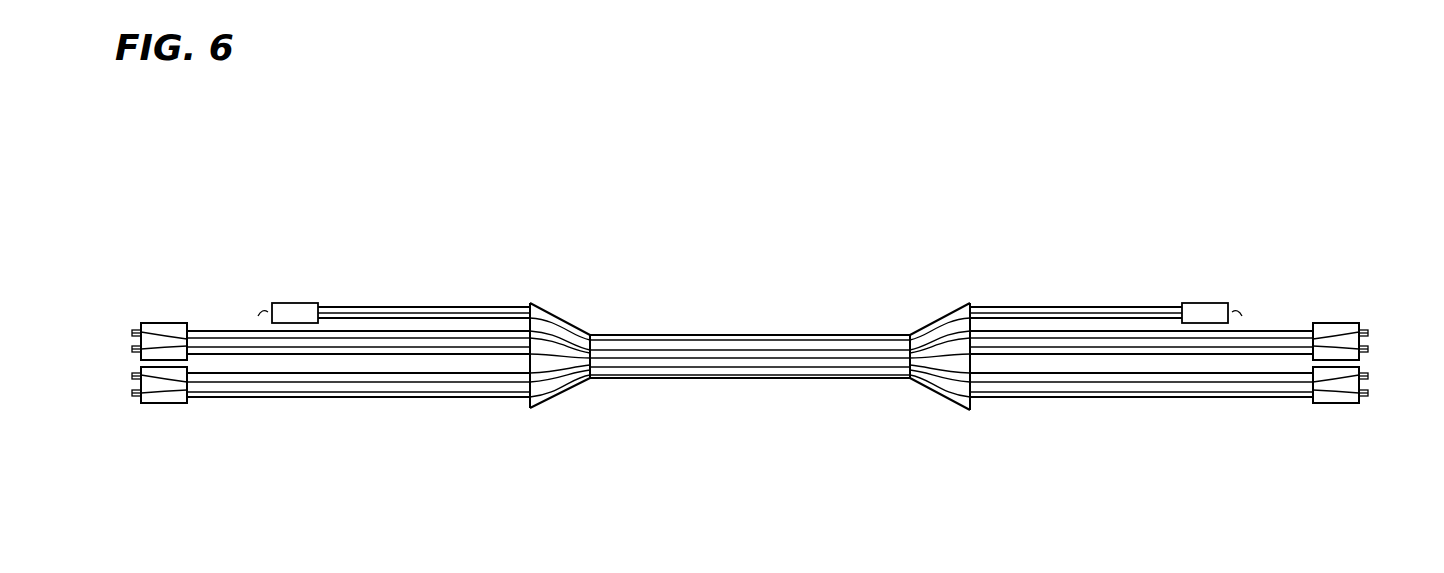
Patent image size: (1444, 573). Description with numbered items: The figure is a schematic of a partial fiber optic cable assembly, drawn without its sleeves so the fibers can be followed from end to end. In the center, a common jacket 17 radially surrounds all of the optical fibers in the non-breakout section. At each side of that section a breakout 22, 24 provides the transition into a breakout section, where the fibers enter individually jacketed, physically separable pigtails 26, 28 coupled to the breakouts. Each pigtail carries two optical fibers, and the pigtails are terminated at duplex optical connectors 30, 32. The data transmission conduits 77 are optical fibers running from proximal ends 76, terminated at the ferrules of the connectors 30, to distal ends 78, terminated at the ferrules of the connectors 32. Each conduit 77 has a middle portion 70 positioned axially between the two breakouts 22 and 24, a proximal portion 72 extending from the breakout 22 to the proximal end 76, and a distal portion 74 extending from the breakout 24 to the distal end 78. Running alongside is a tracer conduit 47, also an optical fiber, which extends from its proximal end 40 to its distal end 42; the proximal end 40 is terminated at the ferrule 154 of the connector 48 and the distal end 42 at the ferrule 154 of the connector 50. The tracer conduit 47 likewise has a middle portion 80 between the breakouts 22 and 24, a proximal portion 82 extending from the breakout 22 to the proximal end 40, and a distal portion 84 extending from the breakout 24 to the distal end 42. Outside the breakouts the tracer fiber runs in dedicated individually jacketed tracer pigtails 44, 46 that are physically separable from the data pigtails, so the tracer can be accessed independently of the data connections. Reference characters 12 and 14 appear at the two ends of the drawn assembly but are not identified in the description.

The second end of fiber optic cable assembly 12 is at (1388, 331).
The first end of fiber optic cable assembly 14 is at (112, 392).
The common jacket 17 is at (651, 335).
The breakout 22 is at (930, 322).
The breakout 24 is at (562, 393).
The pigtails 26 is at (1058, 355).
The pigtails 28 is at (443, 355).
The duplex optical connectors 30 is at (1336, 323).
The duplex optical connectors 32 is at (163, 323).
The proximal end 40 is at (1230, 311).
The distal end 42 is at (270, 311).
The tracer pigtail 44 is at (1057, 307).
The tracer pigtail 46 is at (443, 307).
The tracer conduit 47 is at (495, 307).
The connector 48 is at (1208, 303).
The connector 50 is at (293, 303).
The middle portions 70 is at (816, 376).
The proximal portions 72 is at (1147, 338).
The distal portions 74 is at (262, 392).
The proximal ends 76 is at (1390, 390).
The data transmission conduits 77 is at (602, 376).
The distal ends 78 is at (112, 322).
The middle portion 80 is at (788, 340).
The proximal portion 82 is at (1130, 307).
The distal portion 84 is at (370, 307).
The ferrule 154 is at (268, 312).